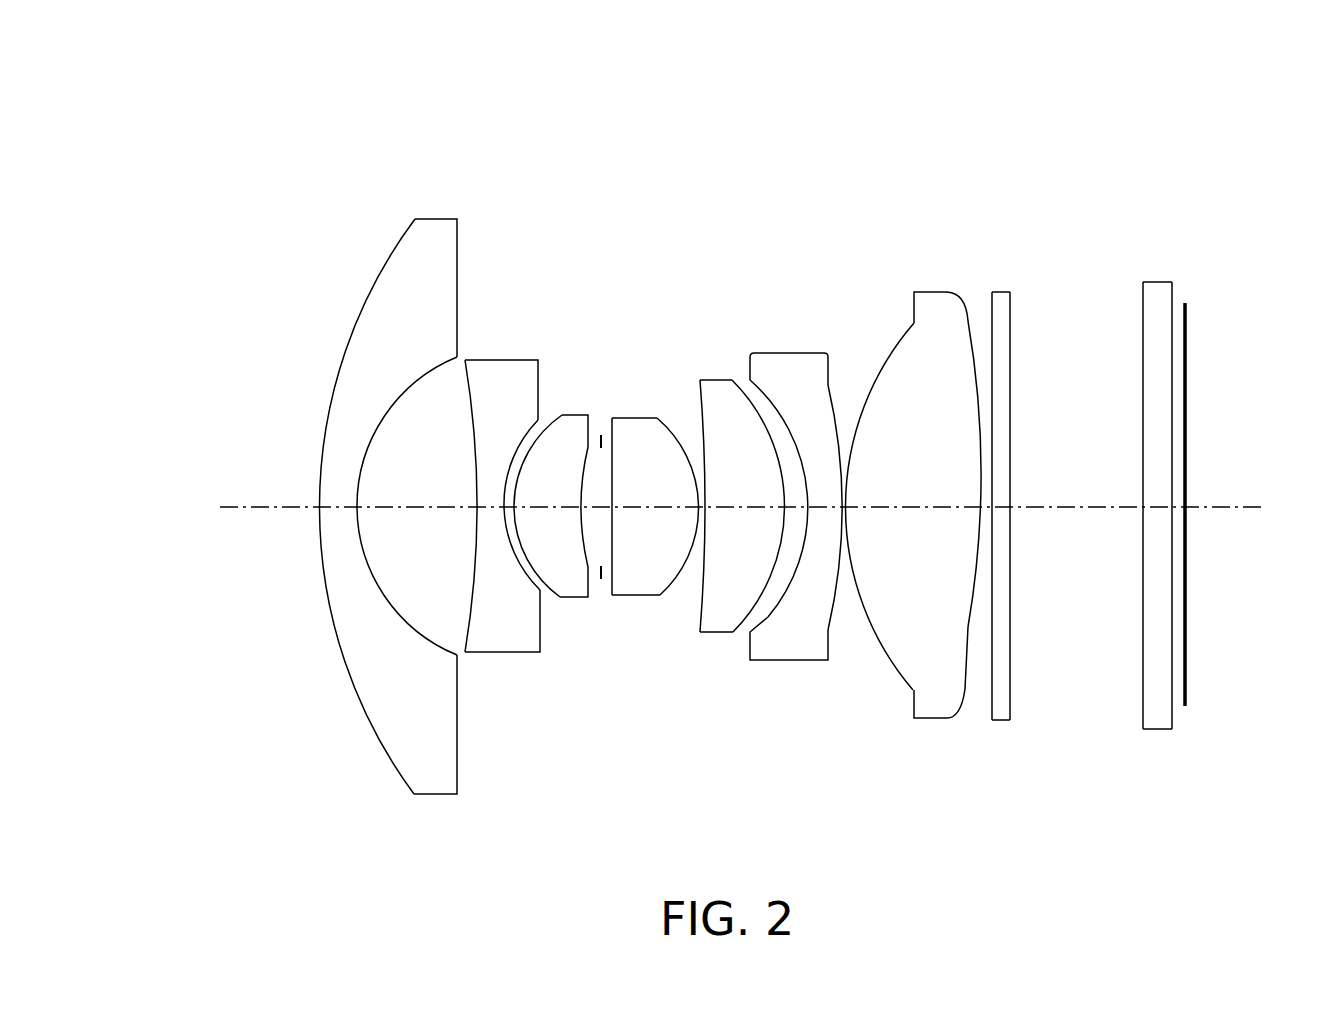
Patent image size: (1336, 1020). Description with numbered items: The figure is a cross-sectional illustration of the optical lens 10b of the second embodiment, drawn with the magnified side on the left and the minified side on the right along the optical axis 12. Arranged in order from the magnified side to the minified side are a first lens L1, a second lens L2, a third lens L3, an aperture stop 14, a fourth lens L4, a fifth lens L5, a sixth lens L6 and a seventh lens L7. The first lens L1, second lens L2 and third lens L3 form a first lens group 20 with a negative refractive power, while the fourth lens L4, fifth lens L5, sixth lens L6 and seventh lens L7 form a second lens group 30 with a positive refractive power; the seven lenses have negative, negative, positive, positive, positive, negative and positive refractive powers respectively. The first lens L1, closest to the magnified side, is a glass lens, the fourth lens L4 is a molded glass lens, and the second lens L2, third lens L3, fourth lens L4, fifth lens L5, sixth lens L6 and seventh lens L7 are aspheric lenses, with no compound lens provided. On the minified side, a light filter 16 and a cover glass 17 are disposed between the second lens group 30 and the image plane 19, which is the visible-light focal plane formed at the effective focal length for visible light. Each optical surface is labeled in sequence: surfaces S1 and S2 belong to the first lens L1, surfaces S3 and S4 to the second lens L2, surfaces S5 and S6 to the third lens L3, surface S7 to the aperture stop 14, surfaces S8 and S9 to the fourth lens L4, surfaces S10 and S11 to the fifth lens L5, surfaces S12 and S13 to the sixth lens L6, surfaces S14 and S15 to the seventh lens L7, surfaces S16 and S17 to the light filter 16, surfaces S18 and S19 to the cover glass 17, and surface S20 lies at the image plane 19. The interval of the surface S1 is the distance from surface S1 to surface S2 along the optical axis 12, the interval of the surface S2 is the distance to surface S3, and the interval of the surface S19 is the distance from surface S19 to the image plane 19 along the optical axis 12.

The optical lens 10b is at (189, 43).
The optical axis 12 is at (238, 505).
The aperture stop 14 is at (602, 436).
The light filter 16 is at (1001, 292).
The cover glass 17 is at (1152, 282).
The image plane 19 is at (1186, 329).
The first lens group 20 is at (355, 134).
The second lens group 30 is at (607, 134).
The first lens L1 is at (440, 222).
The second lens L2 is at (507, 368).
The third lens L3 is at (573, 416).
The fourth lens L4 is at (650, 427).
The fifth lens L5 is at (715, 385).
The sixth lens L6 is at (793, 365).
The seventh lens L7 is at (931, 297).
The surface S1 is at (362, 703).
The surface S2 is at (458, 660).
The surface S3 is at (468, 645).
The surface S4 is at (541, 595).
The surface S5 is at (552, 598).
The surface S6 is at (588, 597).
The surface S7 is at (602, 580).
The surface S8 is at (612, 597).
The surface S9 is at (680, 580).
The surface S10 is at (700, 600).
The surface S11 is at (745, 622).
The surface S12 is at (752, 640).
The surface S13 is at (840, 622).
The surface S14 is at (891, 658).
The surface S15 is at (966, 688).
The surface S16 is at (992, 700).
The surface S17 is at (1011, 692).
The surface S18 is at (1143, 688).
The surface S19 is at (1172, 700).
The surface S20 is at (1187, 680).